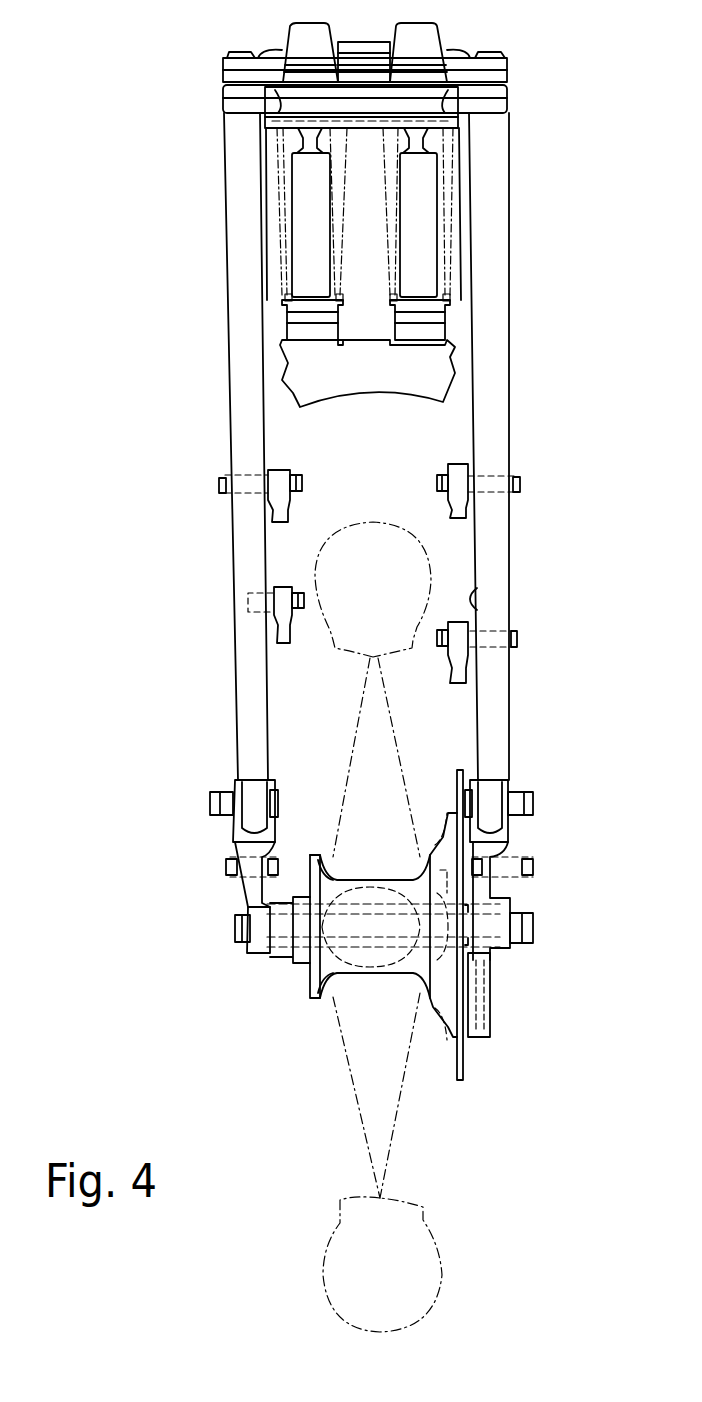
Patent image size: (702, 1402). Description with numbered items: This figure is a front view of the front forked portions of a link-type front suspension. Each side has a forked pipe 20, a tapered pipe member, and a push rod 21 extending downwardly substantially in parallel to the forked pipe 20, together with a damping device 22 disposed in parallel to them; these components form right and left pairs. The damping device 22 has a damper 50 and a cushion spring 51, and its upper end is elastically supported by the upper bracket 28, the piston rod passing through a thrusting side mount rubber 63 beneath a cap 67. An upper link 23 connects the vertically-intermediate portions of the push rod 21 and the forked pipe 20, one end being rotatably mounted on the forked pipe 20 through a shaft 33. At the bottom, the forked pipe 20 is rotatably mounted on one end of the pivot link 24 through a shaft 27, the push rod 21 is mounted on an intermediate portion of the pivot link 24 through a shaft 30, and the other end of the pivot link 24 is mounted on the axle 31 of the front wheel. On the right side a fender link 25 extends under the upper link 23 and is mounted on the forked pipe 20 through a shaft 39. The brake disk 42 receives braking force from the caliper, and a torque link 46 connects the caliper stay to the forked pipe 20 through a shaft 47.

The forked pipe 20 is at (230, 420).
The push rod 21 is at (372, 393).
The damping device 22 is at (266, 222).
The upper link 23 is at (263, 510).
The pivot link 24 is at (240, 846).
The fender link 25 is at (285, 640).
The shaft 27 is at (222, 795).
The upper bracket 28 is at (228, 110).
The shaft 30 is at (228, 870).
The axle 31 is at (535, 930).
The shaft 33 is at (222, 485).
The shaft 39 is at (267, 595).
The brake disk 42 is at (466, 1070).
The torque link 46 is at (460, 672).
The shaft 47 is at (515, 638).
The damper 50 is at (305, 243).
The cushion spring 51 is at (268, 196).
The thrusting side mount rubber 63 is at (224, 70).
The cap 67 is at (290, 32).